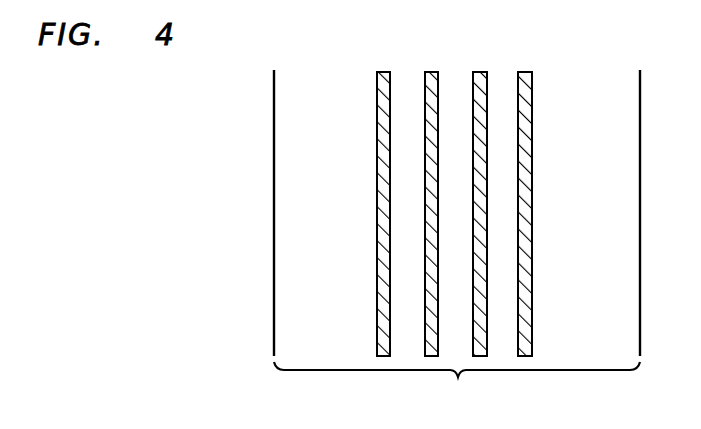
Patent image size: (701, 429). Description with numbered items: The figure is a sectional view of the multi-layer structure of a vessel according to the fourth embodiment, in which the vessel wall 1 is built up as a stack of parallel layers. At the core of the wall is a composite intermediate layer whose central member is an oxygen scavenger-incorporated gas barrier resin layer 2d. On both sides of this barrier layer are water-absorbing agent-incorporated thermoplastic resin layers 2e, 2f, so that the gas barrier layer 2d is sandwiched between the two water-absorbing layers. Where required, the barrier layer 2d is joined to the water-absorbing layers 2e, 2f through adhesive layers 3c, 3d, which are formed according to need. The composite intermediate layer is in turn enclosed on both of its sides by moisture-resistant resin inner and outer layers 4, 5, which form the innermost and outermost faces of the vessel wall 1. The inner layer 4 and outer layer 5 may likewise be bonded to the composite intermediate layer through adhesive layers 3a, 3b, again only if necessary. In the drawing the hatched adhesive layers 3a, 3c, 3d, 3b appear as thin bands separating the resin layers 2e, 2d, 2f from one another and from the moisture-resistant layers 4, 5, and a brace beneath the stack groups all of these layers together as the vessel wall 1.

The vessel wall 1 is at (457, 387).
The moisture-resistant resin inner layer 4 is at (331, 86).
The moisture-resistant resin outer layer 5 is at (599, 86).
The adhesive layer 3a is at (382, 80).
The adhesive layer 3c is at (428, 75).
The adhesive layer 3d is at (477, 76).
The adhesive layer 3b is at (525, 80).
The water-absorbing agent-incorporated thermoplastic resin layer 2e is at (409, 80).
The oxygen scavenger-incorporated gas barrier resin layer 2d is at (455, 80).
The water-absorbing agent-incorporated thermoplastic resin layer 2f is at (501, 80).